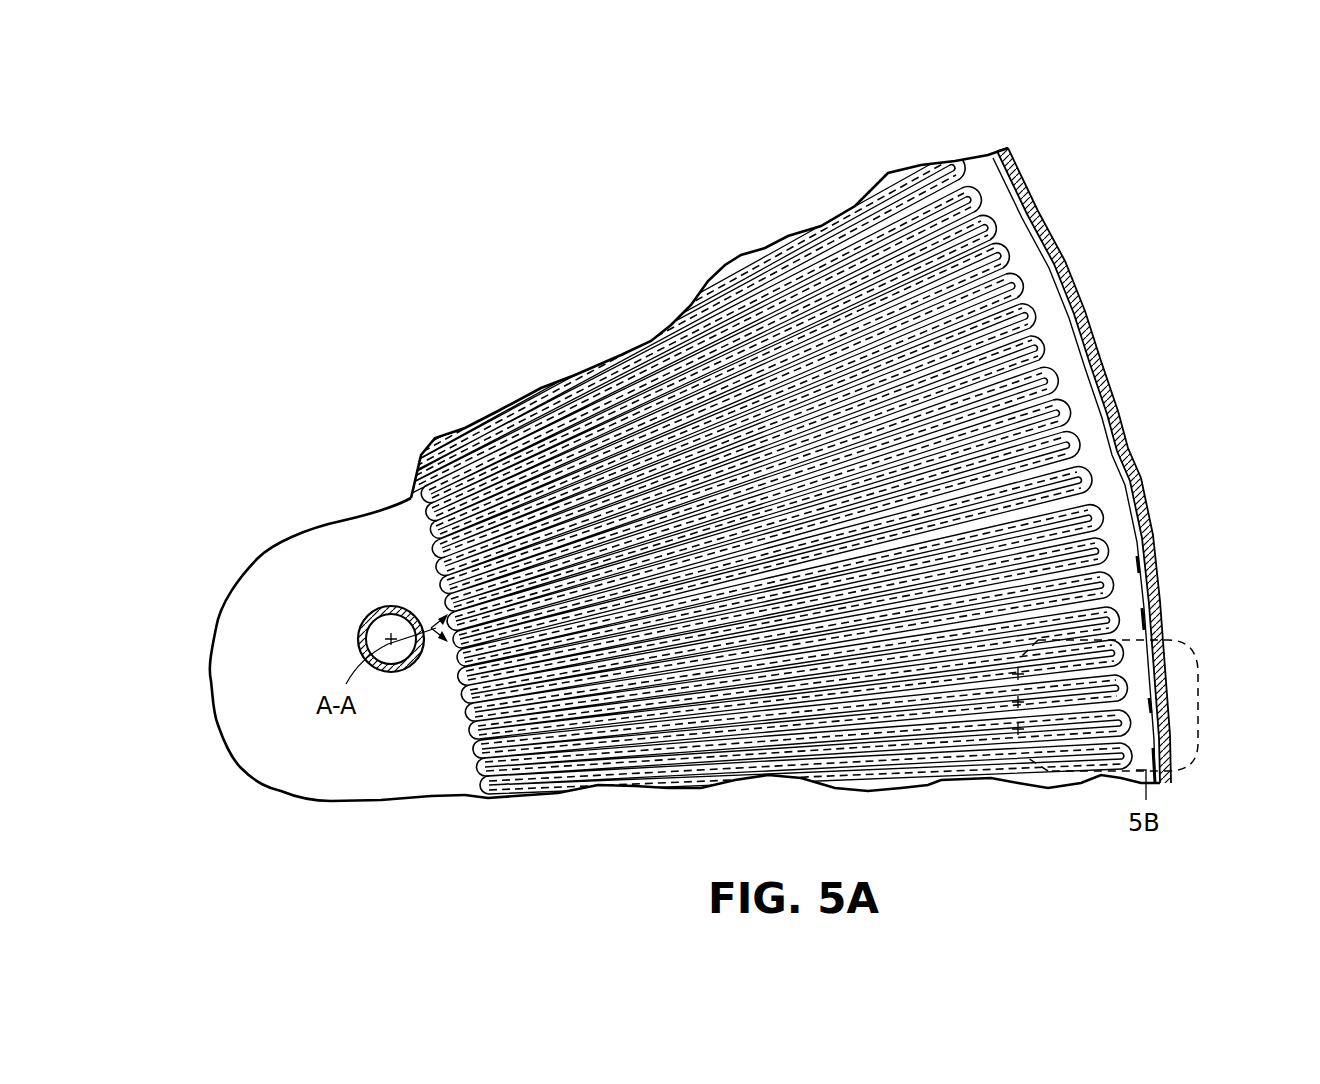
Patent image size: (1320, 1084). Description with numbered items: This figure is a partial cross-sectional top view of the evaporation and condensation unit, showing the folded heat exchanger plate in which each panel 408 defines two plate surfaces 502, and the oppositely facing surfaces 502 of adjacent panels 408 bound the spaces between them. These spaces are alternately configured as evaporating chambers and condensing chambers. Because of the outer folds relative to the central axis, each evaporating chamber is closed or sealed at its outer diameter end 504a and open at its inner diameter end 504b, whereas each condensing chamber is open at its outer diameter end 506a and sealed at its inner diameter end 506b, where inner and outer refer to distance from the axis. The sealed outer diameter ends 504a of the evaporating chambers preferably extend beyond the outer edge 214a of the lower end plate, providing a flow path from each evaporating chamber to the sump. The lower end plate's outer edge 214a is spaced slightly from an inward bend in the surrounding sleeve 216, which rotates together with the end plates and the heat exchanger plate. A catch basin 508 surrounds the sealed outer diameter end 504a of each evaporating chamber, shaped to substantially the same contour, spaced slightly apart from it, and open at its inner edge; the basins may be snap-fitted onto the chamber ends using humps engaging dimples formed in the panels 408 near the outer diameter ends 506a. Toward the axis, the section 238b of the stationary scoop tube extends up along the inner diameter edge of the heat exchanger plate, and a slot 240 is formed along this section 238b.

The panel 408 is at (763, 262).
The plate surface 502 is at (806, 238).
The outer diameter end of evaporating chamber 504a is at (1088, 471).
The inner diameter end of evaporating chamber 504b is at (415, 548).
The outer diameter end of condensing chamber 506a is at (1040, 331).
The inner diameter end of condensing chamber 506b is at (468, 722).
The catch basin 508 is at (1125, 580).
The sleeve 216 is at (1052, 244).
The outer edge of lower end plate 214a is at (999, 172).
The section of scoop tube 238b is at (352, 606).
The slot 240 is at (392, 663).